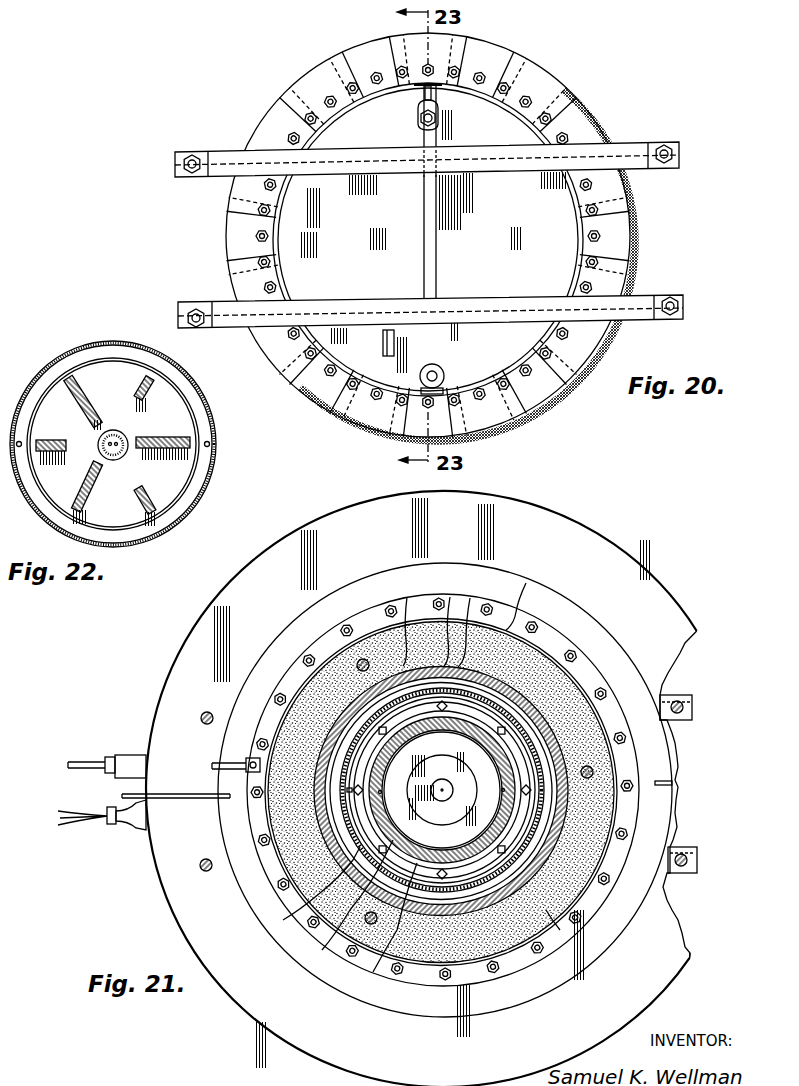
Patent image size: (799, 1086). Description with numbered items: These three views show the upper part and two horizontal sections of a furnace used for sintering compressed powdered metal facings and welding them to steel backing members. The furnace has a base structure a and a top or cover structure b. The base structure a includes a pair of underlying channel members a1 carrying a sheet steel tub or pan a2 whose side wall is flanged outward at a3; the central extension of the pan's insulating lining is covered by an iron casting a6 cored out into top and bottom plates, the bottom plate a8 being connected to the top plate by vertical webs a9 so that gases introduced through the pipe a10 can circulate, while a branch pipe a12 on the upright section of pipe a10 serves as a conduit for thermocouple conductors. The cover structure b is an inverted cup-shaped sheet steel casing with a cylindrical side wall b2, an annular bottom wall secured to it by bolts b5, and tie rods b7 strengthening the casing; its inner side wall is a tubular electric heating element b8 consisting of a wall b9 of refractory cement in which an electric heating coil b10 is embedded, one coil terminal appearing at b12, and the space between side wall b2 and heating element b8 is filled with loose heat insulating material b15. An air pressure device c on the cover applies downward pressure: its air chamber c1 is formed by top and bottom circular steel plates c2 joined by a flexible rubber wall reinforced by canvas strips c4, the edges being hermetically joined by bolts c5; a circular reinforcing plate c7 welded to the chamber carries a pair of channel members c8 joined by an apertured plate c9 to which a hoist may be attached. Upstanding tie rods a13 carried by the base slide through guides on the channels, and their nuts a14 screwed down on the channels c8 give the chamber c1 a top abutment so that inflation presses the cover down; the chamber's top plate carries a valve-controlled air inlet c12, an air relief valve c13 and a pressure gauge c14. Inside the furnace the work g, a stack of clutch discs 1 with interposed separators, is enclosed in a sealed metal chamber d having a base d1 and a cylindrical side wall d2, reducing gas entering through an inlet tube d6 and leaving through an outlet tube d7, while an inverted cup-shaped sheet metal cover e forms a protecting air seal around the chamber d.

In FIG. 20, the air pressure device c is at (252, 122).
In FIG. 20, the air chamber c1 is at (573, 102).
In FIG. 20, the circular steel plates c2 is at (338, 102).
In FIG. 20, the canvas strips c4 is at (628, 232).
In FIG. 20, the bolts c5 is at (466, 72).
In FIG. 20, the circular reinforcing plate c7 is at (290, 244).
In FIG. 20, the channel members c8 is at (643, 147).
In FIG. 20, the apertured plate c9 is at (437, 268).
In FIG. 20, the valve-controlled air inlet c12 is at (417, 118).
In FIG. 20, the air relief valve c13 is at (446, 376).
In FIG. 20, the pressure gauge c14 is at (395, 340).
In FIG. 20, the tie bolts or rods a13 is at (176, 165).
In FIG. 21, the tie bolts or rods a13 is at (683, 708).
In FIG. 20, the nuts a14 is at (192, 156).
In FIG. 22, the bottom plate a8 is at (178, 417).
In FIG. 22, the iron casting a6 is at (182, 480).
In FIG. 22, the vertical webs a9 is at (70, 378).
In FIG. 22, the pipe a10 is at (122, 452).
In FIG. 21, the pipe a10 is at (130, 754).
In FIG. 22, the inverted cup-shape cover e is at (150, 540).
In FIG. 21, the inverted cup-shape cover e is at (357, 720).
In FIG. 21, the base structure a is at (650, 568).
In FIG. 21, the channel members a1 is at (697, 692).
In FIG. 21, the sheet steel tub or pan a2 is at (655, 898).
In FIG. 21, the outward flange a3 is at (670, 977).
In FIG. 21, the branch pipe a12 is at (146, 830).
In FIG. 21, the cover structure b is at (583, 660).
In FIG. 21, the cylindrical side wall b2 is at (525, 593).
In FIG. 21, the bolts b5 is at (578, 652).
In FIG. 21, the tie rods or bolts b7 is at (357, 662).
In FIG. 21, the tubular electric heating element b8 is at (402, 618).
In FIG. 21, the wall of refractory and heat insulating cement b9 is at (446, 618).
In FIG. 21, the electric heating coil b10 is at (477, 622).
In FIG. 21, the terminal b12 is at (240, 764).
In FIG. 21, the loose heat insulating material b15 is at (560, 930).
In FIG. 21, the inner sealed chamber d is at (315, 888).
In FIG. 21, the metal base d1 is at (353, 912).
In FIG. 21, the cylindrical side wall d2 is at (390, 933).
In FIG. 21, the inlet tube d6 is at (180, 794).
In FIG. 21, the outlet tube d7 is at (672, 783).
In FIG. 21, the clutch disc 1 is at (442, 790).
In FIG. 21, the work g is at (449, 798).